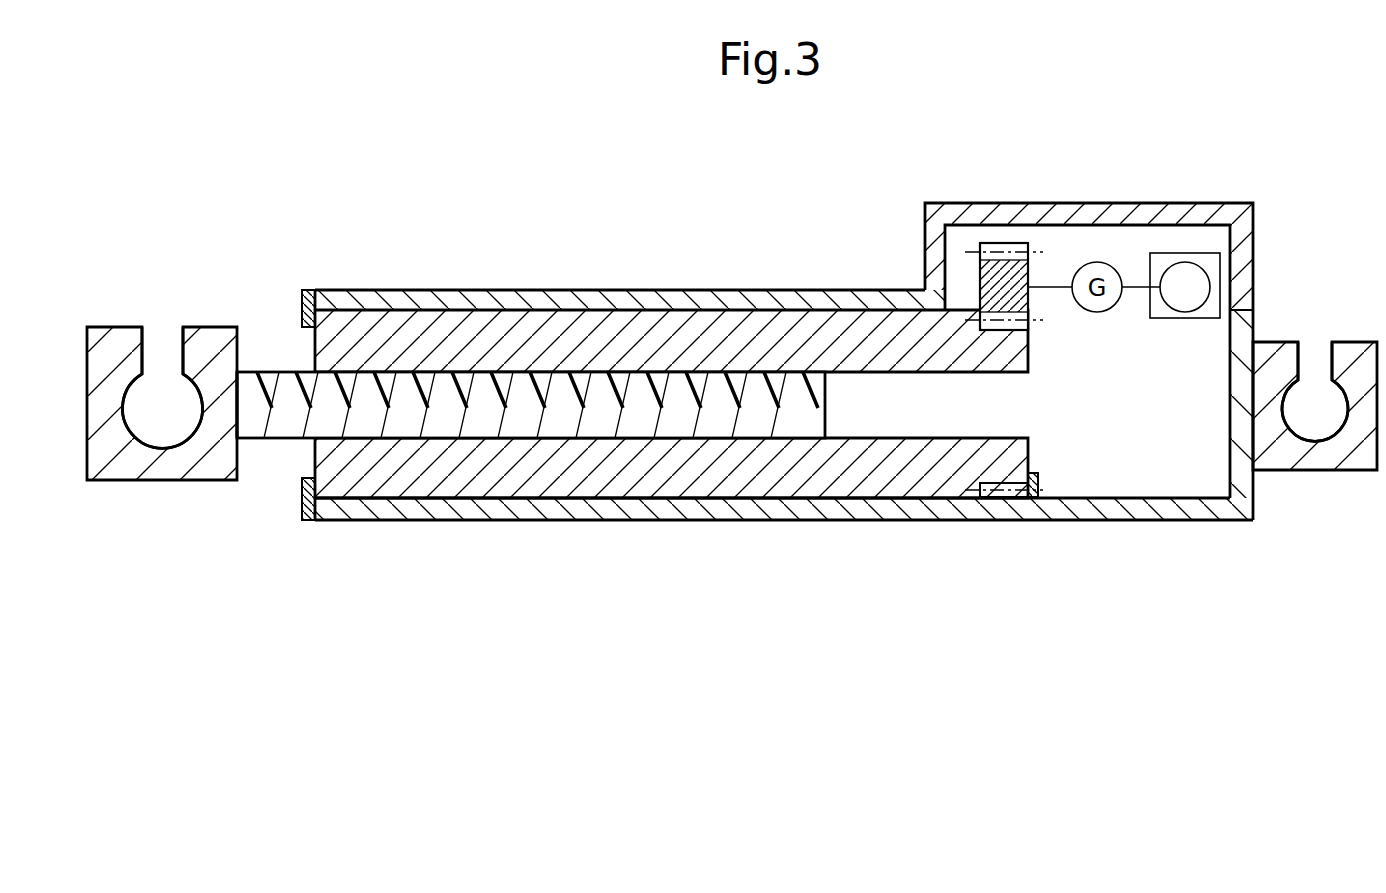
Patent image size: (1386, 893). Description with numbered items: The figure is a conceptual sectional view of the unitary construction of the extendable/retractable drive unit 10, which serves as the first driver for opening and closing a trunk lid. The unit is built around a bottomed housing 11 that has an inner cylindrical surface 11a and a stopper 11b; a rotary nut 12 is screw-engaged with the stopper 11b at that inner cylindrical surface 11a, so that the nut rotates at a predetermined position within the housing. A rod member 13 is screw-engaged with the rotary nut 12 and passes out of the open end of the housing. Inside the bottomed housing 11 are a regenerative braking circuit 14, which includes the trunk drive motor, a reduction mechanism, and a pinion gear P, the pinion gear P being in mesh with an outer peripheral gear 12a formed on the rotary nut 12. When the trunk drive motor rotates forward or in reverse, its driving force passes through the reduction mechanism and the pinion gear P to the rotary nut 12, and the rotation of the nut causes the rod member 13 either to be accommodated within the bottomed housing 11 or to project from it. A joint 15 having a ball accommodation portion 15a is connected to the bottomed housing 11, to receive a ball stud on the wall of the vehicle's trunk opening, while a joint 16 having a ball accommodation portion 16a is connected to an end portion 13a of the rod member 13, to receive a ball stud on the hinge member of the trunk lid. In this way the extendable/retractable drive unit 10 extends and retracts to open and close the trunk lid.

The extendable/retractable drive unit 10 is at (1037, 172).
The bottomed housing 11 is at (450, 290).
The inner cylindrical surface 11a is at (590, 485).
The stopper 11b is at (308, 290).
The rotary nut 12 is at (555, 337).
The outer peripheral gear 12a is at (1030, 324).
The rod member 13 is at (667, 397).
The end portion 13a is at (241, 398).
The regenerative braking circuit 14 is at (1157, 318).
The joint 15 is at (1363, 387).
The ball accommodation portion 15a is at (1300, 393).
The joint 16 is at (133, 463).
The ball accommodation portion 16a is at (158, 382).
The pinion gear P is at (1023, 277).